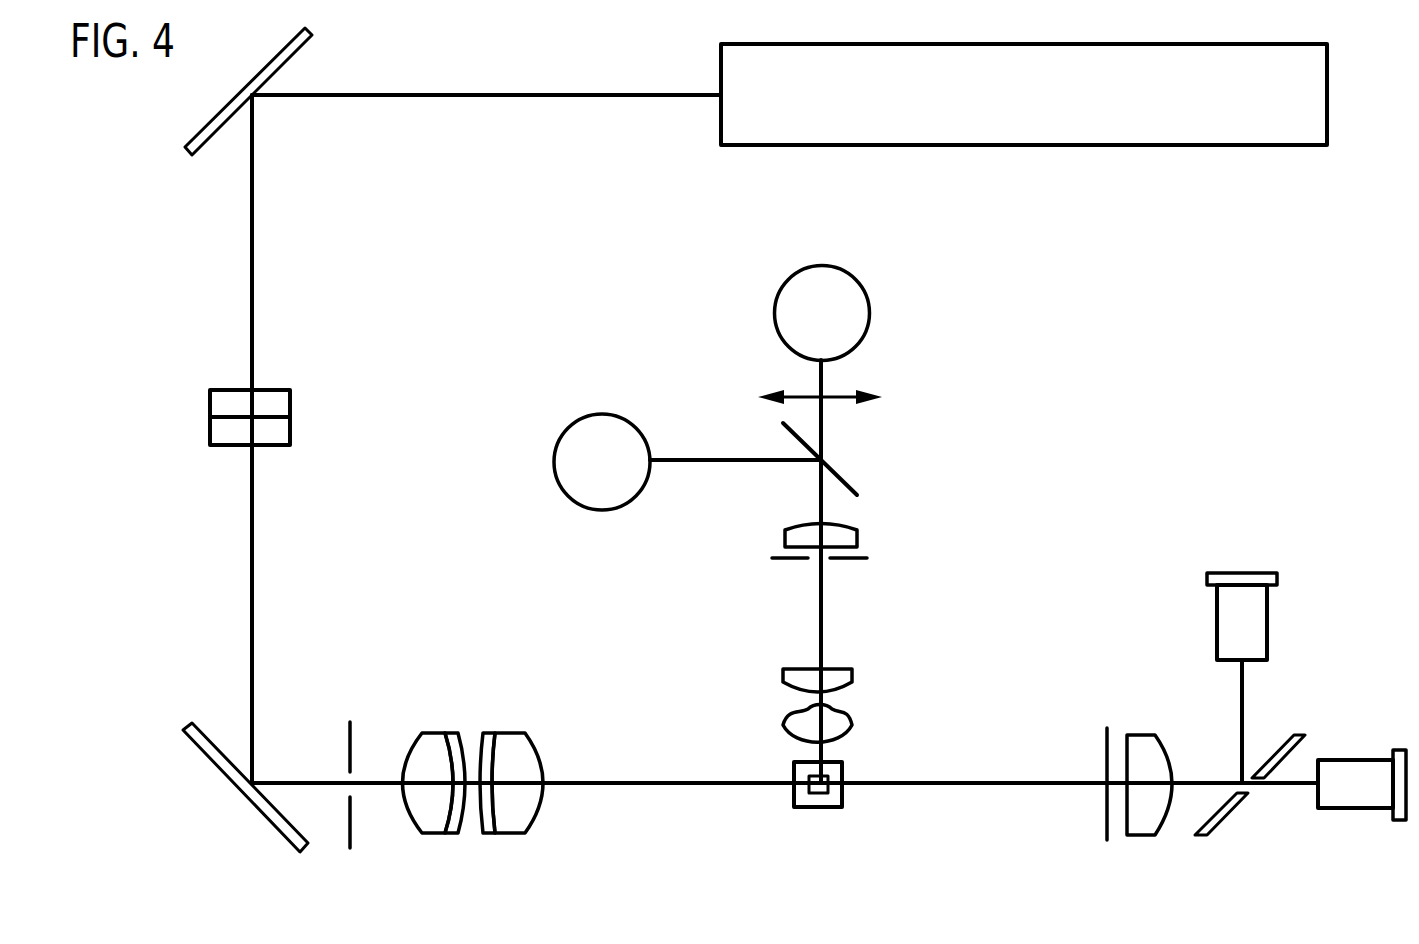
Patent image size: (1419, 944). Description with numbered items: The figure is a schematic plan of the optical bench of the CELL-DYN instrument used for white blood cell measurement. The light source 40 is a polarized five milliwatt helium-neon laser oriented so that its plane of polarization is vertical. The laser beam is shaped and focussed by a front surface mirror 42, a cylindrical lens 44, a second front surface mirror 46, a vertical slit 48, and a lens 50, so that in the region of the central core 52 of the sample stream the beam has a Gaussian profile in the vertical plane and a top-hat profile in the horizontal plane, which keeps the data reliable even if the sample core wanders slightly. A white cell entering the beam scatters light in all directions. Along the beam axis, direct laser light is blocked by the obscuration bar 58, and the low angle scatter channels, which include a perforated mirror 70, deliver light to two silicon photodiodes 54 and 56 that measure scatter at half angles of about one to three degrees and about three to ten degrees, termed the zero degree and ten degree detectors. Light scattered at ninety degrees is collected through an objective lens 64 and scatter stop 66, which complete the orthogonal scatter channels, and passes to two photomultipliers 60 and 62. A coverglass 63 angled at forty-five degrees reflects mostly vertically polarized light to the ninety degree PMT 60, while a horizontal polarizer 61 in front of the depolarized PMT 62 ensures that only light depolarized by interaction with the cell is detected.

The light source 40 is at (819, 107).
The front surface mirror 42 is at (252, 80).
The cylindrical lens 44 is at (212, 390).
The front surface mirror 46 is at (210, 729).
The vertical slit 48 is at (353, 750).
The lens 50 is at (472, 832).
The central core 52 is at (838, 773).
The silicon photodiode 54 is at (1367, 799).
The silicon photodiode 56 is at (1259, 636).
The obscuration bar 58 is at (1110, 740).
The photomultiplier 60 is at (600, 497).
The horizontal polarizer 61 is at (840, 397).
The photomultiplier 62 is at (822, 350).
The coverglass 63 is at (833, 470).
The objective lens 64 is at (835, 703).
The scatter stop 66 is at (867, 558).
The perforated mirror 70 is at (1275, 745).